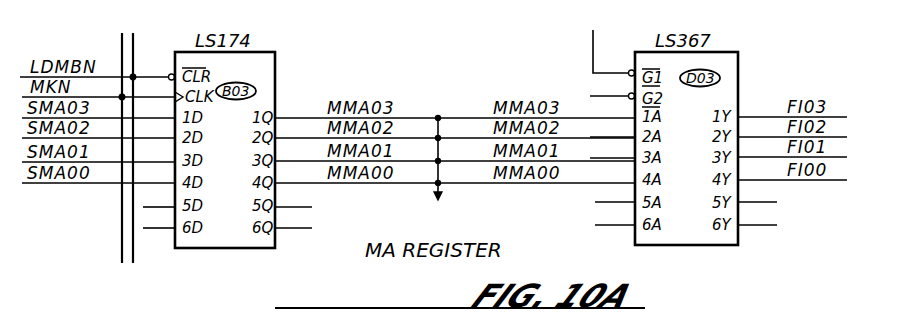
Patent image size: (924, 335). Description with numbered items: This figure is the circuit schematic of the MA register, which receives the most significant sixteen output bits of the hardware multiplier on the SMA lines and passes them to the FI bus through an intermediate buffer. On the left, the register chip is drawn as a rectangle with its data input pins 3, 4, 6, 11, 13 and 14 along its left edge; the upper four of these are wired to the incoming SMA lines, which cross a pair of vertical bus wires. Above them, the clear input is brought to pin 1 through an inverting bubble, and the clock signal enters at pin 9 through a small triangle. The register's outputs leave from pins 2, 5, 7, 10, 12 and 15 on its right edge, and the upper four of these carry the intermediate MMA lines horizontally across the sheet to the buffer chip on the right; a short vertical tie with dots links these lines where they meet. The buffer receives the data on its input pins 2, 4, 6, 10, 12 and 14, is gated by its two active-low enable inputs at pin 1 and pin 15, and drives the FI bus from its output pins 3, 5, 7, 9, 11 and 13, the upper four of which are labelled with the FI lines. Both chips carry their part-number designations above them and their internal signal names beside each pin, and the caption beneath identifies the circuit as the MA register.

The pin 1 (CLR / G1 enable input) 1 is at (327, 55).
The pin 2 (1Q output / 1A input) 2 is at (455, 108).
The pin 3 (1D input / 1Y output) 3 is at (434, 108).
The pin 4 (2D input / 2A input) 4 is at (328, 128).
The pin 5 (2Q output / 2Y output) 5 is at (561, 128).
The pin 6 (3D input / 3A input) 6 is at (328, 151).
The pin 7 (3Q output / 3Y output) 7 is at (561, 150).
The pin 9 (CLK input / 4Y output) 9 is at (434, 129).
The pin 10 (4Q output / 4A input) 10 is at (455, 173).
The pin 11 (4D input / 5Y output) 11 is at (399, 183).
The pin 12 (5Q output / 5A input) 12 is at (455, 196).
The pin 13 (5D input / 6Y output) 13 is at (460, 206).
The pin 14 (6D input / 6A input) 14 is at (389, 218).
The pin 15 (6Q output / G2 enable input) 15 is at (455, 152).